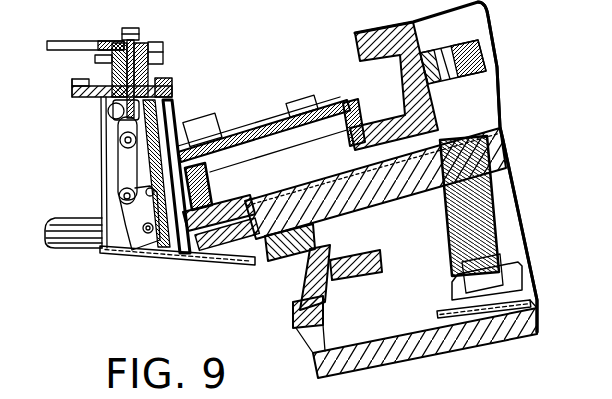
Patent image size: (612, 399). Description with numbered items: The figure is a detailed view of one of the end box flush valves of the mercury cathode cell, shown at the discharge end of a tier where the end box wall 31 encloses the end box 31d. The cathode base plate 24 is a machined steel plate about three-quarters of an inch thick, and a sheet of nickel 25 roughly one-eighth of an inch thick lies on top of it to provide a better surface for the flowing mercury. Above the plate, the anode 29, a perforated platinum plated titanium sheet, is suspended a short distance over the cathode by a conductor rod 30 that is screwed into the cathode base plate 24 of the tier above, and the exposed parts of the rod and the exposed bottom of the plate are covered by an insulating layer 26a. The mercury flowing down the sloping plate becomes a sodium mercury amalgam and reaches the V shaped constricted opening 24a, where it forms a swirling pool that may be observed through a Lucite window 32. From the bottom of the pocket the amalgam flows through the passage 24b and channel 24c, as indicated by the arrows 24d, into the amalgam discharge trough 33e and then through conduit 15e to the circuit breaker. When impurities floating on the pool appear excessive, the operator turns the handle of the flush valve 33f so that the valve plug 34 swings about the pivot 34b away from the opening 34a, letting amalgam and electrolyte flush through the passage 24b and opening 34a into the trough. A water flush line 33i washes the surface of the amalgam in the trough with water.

The conduit 15e is at (77, 249).
The cathode base plate 24 is at (500, 142).
The V shaped constricted opening 24a is at (345, 104).
The passage 24b is at (252, 238).
The channel 24c is at (170, 100).
The arrows 24d is at (160, 80).
The sheet of nickel 25 is at (517, 309).
The insulating layer 26a is at (370, 207).
The anode 29 is at (440, 311).
The conductor rod 30 is at (488, 193).
The housing wall 31 is at (514, 167).
The end box 31d is at (265, 158).
The Lucite window 32 is at (233, 136).
The amalgam discharge trough 33e is at (115, 162).
The flush valve 33f is at (97, 42).
The water flush line 33i is at (108, 113).
The valve plug 34 is at (155, 258).
The opening 34a is at (181, 258).
The pivot 34b is at (133, 205).